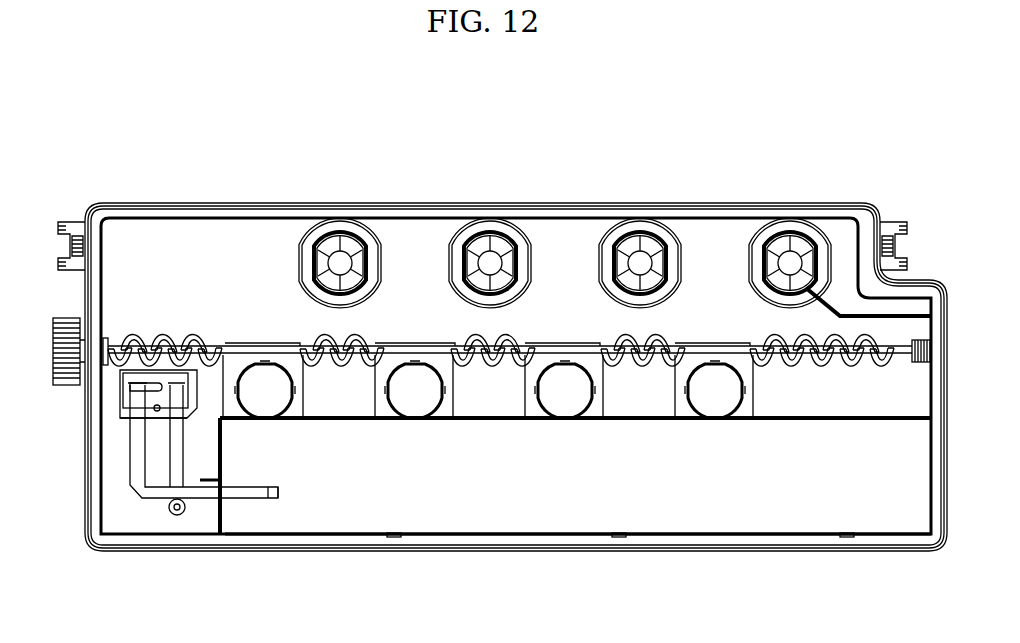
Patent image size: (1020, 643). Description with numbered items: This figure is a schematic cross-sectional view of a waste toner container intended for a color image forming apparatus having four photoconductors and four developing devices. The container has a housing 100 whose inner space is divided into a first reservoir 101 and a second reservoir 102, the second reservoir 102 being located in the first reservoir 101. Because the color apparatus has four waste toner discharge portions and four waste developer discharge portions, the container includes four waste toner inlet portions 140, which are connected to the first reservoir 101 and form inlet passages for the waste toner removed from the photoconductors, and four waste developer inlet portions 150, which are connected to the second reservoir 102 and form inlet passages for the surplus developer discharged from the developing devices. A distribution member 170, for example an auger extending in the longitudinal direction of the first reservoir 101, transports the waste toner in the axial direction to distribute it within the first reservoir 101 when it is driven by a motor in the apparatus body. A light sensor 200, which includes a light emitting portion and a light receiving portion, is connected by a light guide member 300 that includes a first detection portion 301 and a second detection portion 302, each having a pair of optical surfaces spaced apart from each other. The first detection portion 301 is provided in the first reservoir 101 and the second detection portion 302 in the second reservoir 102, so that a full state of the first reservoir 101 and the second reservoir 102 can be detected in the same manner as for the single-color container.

The housing 100 is at (847, 197).
The first reservoir 101 is at (221, 394).
The second reservoir 102 is at (714, 504).
The waste toner inlet portion 140 is at (340, 251).
The waste developer inlet portion 150 is at (282, 418).
The distribution member 170 is at (200, 346).
The light sensor 200 is at (113, 421).
The light guide member 300 is at (152, 503).
The first detection portion 301 is at (134, 393).
The second detection portion 302 is at (280, 494).